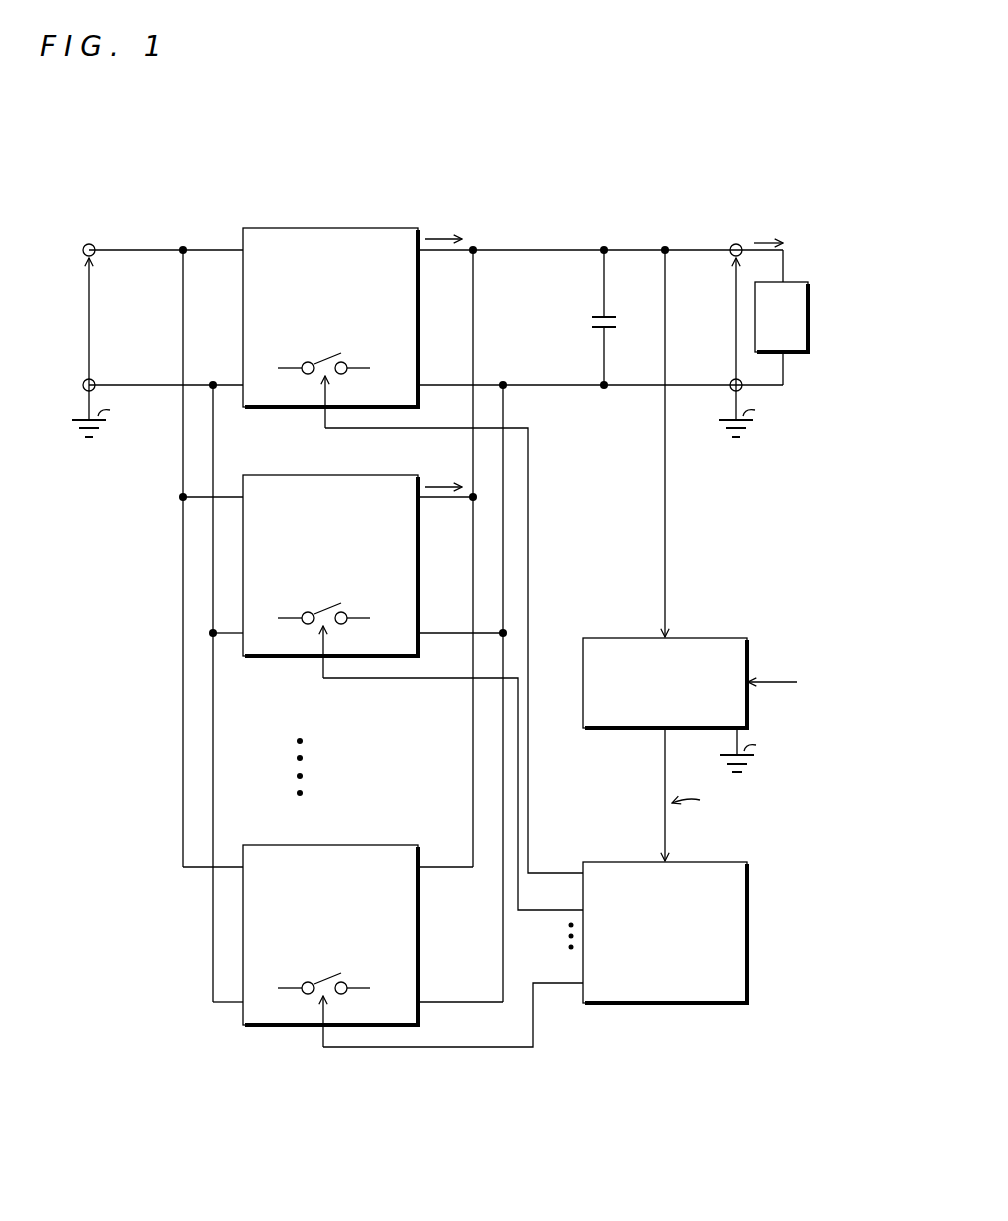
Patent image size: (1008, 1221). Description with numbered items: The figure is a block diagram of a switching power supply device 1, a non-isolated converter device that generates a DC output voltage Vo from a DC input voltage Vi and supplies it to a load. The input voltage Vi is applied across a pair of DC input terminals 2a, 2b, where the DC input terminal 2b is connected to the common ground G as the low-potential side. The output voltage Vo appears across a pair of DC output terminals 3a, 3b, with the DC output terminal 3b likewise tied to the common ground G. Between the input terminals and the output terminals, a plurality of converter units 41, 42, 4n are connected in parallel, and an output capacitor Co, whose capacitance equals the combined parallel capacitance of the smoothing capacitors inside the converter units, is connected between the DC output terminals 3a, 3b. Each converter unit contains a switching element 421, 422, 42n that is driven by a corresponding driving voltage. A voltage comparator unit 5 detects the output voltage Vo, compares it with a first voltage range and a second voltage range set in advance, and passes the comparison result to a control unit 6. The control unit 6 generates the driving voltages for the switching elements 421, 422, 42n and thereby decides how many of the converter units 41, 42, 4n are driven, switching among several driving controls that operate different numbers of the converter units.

The switching power supply device 1 is at (457, 133).
The DC input terminal 2a is at (91, 243).
The DC input terminal 2b is at (93, 379).
The DC output terminal 3a is at (737, 243).
The DC output terminal 3b is at (731, 391).
The converter unit 41 is at (372, 228).
The converter unit 42 is at (372, 475).
The converter unit 4n is at (372, 845).
The switching element 421 is at (324, 381).
The switching element 422 is at (324, 631).
The switching element 42n is at (324, 1000).
The voltage comparator unit 5 is at (716, 638).
The control unit 6 is at (716, 862).
The output capacitor Co is at (612, 315).